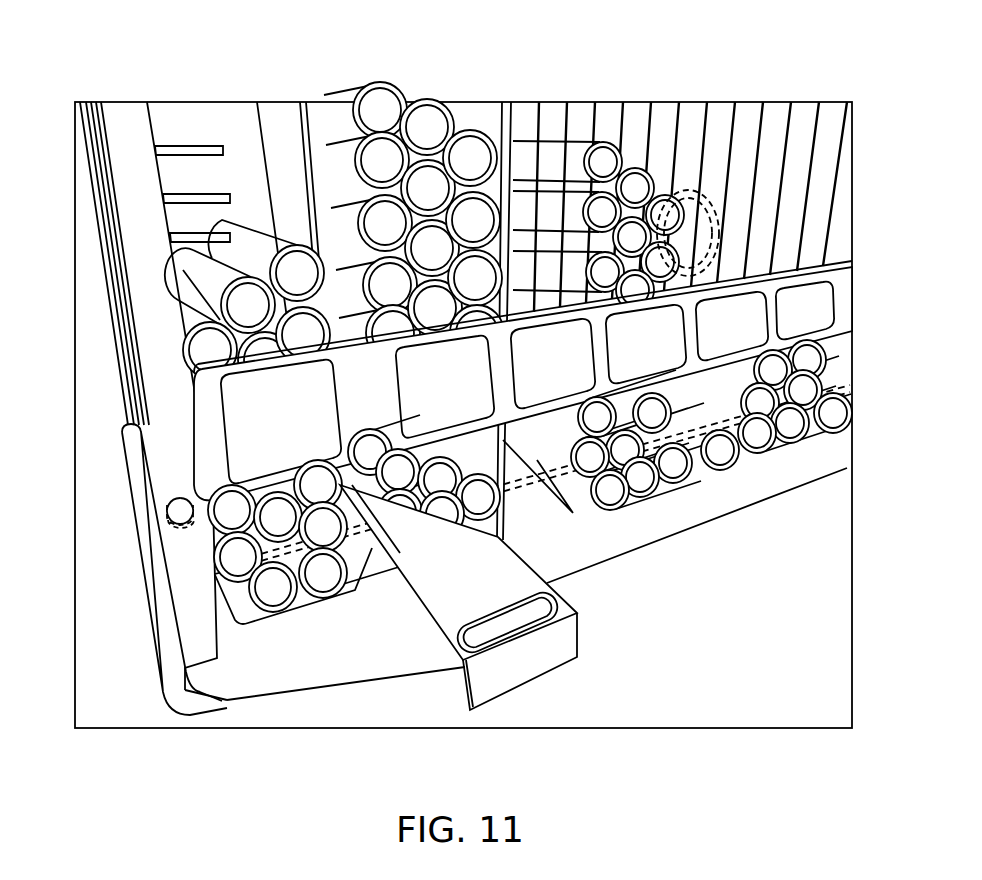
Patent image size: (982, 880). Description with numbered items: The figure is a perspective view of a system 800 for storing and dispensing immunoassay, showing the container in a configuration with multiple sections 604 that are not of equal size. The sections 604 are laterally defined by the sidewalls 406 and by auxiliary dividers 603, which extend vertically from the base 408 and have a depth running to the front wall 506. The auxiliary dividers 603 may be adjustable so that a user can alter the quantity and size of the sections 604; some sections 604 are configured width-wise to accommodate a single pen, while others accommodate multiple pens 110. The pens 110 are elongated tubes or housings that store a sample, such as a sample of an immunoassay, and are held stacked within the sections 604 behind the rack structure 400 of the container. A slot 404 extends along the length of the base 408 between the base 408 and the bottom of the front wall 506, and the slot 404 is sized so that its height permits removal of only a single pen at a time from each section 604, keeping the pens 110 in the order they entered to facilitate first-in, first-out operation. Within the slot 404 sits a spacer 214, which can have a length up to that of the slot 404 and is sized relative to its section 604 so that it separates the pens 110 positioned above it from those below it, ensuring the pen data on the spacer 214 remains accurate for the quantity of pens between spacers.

The pens 110 is at (465, 150).
The spacer 214 is at (460, 603).
The rack frame 400 is at (822, 183).
The slot 404 is at (527, 518).
The sidewalls 406 is at (125, 182).
The base 408 is at (272, 655).
The front wall 506 is at (143, 375).
The auxiliary dividers 603 is at (277, 112).
The sections 604 is at (182, 118).
The system for storing and dispensing immunoassay 800 is at (786, 36).